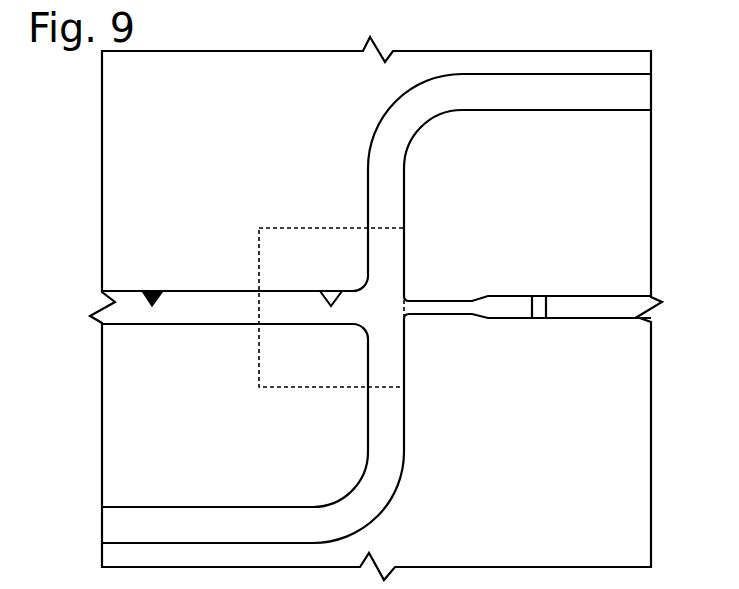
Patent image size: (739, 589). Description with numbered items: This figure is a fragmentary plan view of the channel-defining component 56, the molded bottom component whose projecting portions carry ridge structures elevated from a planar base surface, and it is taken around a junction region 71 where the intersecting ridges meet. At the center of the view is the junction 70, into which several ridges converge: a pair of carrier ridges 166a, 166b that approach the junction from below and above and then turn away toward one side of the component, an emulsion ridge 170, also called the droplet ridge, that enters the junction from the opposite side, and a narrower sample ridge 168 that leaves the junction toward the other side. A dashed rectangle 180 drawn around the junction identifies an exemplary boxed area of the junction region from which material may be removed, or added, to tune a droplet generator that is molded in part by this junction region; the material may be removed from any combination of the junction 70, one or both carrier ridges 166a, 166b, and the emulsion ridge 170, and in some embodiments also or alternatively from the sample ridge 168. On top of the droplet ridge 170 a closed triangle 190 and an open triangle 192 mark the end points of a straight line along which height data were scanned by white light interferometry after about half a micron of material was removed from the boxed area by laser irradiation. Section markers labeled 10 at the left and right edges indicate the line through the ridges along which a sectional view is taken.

The channel-defining component 56 is at (264, 46).
The junction region 71 is at (275, 158).
The carrier ridge 166b is at (405, 193).
The carrier ridge 166a is at (405, 426).
The emulsion ridge 170 is at (195, 325).
The junction 70 is at (393, 319).
The sample ridge 168 is at (516, 319).
The dashed rectangle 180 is at (258, 245).
The closed triangle 190 is at (155, 291).
The open triangle 192 is at (332, 292).
The section line 10- 10 is at (118, 332).